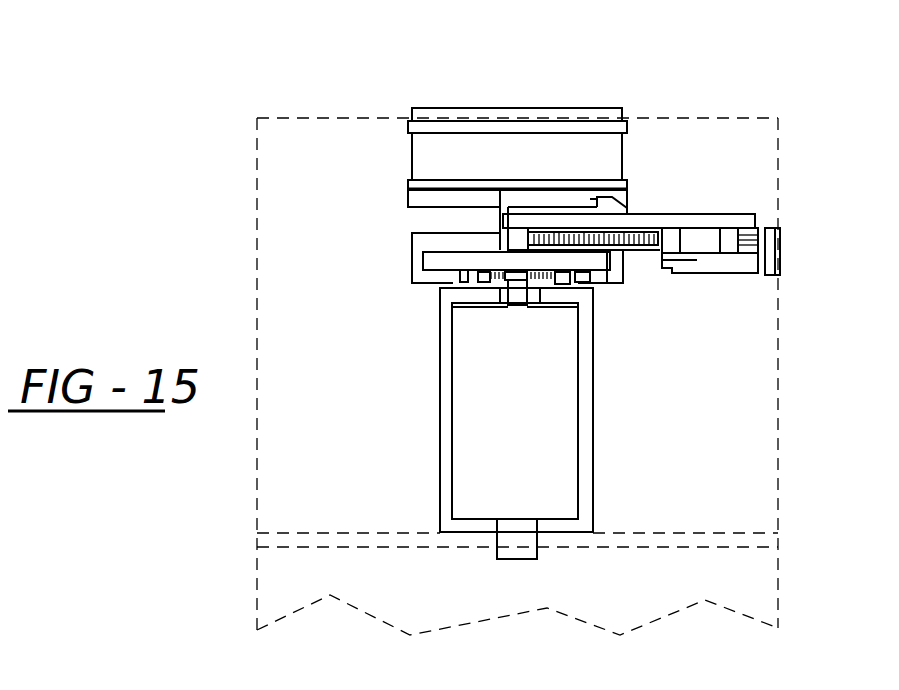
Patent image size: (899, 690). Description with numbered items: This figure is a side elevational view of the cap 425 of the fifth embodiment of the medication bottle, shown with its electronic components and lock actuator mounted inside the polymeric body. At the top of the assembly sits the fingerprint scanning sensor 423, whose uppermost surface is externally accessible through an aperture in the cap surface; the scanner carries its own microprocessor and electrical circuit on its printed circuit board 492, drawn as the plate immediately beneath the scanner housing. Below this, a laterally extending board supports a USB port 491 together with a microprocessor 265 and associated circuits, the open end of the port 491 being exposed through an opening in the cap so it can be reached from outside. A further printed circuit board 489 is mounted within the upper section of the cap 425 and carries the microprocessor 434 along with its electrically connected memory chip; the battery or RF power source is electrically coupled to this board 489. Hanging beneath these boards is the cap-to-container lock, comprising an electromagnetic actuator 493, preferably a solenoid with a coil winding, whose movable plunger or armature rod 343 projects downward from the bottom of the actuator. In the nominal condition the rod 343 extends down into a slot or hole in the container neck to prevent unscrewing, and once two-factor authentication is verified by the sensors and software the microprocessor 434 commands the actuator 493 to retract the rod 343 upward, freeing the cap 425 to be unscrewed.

The cap 425 is at (732, 420).
The fingerprint scanning sensor 423 is at (505, 163).
The printed circuit board 492 is at (413, 185).
The microprocessor 265 is at (678, 224).
The USB port 491 is at (725, 260).
The printed circuit board 489 is at (503, 263).
The microprocessor 434 is at (502, 284).
The electromagnetic actuator 493 is at (508, 446).
The armature rod 343 is at (525, 539).